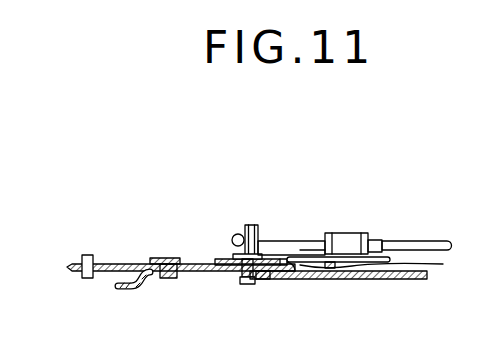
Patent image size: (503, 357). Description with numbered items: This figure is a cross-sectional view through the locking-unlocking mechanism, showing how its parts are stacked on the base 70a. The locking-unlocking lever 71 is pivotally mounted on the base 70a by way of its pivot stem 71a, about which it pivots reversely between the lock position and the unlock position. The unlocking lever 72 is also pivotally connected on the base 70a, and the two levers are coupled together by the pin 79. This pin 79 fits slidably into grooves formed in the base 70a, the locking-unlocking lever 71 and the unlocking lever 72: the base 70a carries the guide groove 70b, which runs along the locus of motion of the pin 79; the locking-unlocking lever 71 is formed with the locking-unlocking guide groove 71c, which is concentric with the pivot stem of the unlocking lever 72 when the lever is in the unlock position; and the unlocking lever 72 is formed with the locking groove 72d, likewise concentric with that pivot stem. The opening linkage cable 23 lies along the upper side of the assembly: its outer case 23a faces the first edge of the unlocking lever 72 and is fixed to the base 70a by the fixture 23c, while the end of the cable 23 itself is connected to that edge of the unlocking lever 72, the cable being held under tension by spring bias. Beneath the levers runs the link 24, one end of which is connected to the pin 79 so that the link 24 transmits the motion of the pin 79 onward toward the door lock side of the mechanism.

The locking-unlocking lever 71 is at (119, 261).
The pivot stem 71a is at (158, 257).
The locking-unlocking guide groove 71c is at (264, 282).
The unlocking lever 72 is at (216, 259).
The locking groove 72d is at (279, 255).
The pin 79 is at (240, 257).
The base 70a is at (384, 265).
The guide groove 70b is at (243, 284).
The opening linkage cable 23 is at (309, 240).
The fixture 23c is at (350, 233).
The outer case 23a is at (429, 240).
The link 24 is at (365, 280).